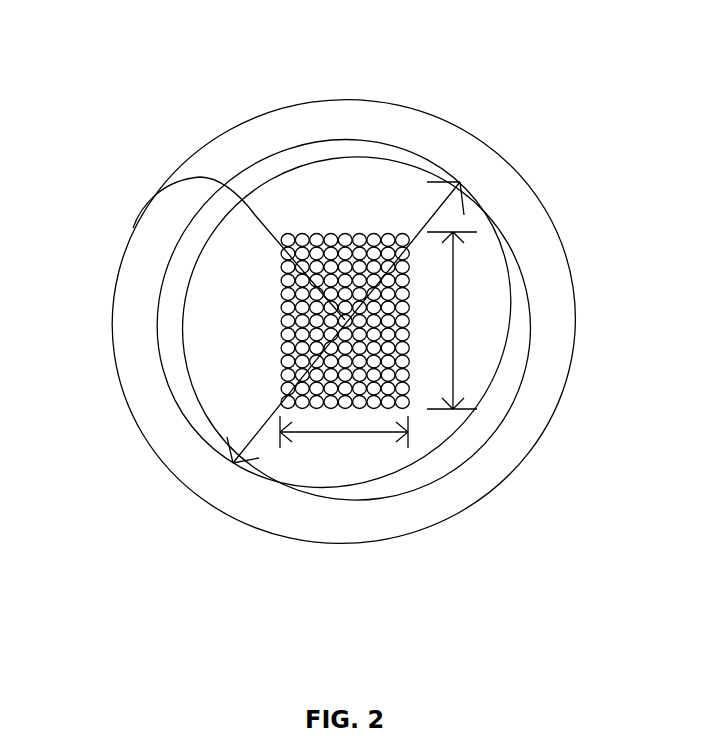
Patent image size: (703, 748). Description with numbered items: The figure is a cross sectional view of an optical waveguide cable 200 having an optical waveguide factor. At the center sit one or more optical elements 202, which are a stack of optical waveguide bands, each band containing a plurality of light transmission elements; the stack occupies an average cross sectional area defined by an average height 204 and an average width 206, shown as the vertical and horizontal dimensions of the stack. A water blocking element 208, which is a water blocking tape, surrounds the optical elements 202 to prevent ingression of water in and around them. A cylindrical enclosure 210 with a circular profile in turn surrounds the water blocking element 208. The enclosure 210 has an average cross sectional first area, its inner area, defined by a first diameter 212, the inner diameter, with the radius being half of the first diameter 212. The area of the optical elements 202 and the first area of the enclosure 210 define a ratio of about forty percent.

The optical waveguide cable 200 is at (343, 294).
The optical elements 202 is at (230, 133).
The average height 204 is at (455, 288).
The average width 206 is at (347, 433).
The water blocking element 208 is at (210, 432).
The cylindrical enclosure 210 is at (155, 355).
The first diameter 212 is at (412, 233).